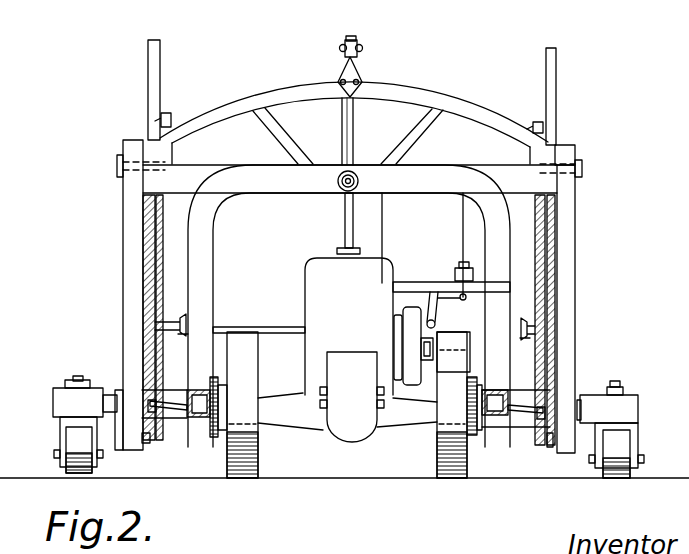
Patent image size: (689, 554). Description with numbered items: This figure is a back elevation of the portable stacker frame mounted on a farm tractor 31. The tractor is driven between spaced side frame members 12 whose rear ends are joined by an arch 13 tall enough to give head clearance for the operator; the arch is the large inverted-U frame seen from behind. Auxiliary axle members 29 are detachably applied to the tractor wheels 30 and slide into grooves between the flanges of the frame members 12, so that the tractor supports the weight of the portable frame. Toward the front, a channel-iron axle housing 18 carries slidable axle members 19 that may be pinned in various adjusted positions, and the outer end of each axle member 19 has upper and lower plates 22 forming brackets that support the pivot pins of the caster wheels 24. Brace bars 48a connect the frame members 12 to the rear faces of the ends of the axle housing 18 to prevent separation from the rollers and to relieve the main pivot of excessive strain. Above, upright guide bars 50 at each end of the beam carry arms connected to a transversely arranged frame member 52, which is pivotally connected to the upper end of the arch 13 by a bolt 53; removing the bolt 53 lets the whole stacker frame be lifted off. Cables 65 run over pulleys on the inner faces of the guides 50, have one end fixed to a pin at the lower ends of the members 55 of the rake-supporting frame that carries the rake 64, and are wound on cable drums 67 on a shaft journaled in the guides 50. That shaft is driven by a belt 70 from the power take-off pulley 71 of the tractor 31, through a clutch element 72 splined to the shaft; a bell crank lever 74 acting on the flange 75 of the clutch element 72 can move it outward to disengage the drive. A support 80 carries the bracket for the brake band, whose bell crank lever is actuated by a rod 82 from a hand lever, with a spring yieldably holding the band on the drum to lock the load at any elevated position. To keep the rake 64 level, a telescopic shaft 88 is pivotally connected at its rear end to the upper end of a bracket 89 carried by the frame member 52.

The frame member 12 is at (205, 420).
The arch 13 is at (205, 259).
The axle housing 18 is at (163, 398).
The axle member 19 is at (607, 409).
The plate 22 is at (627, 395).
The caster wheel 24 is at (625, 447).
The auxiliary axle member 29 is at (202, 408).
The wheel 30 is at (252, 376).
The tractor 31 is at (347, 317).
The brace bar 48a is at (172, 412).
The guide bar 50 is at (158, 74).
The frame member 52 is at (427, 92).
The bolt 53 is at (346, 188).
The member 55 is at (571, 218).
The rake 64 is at (172, 115).
The cable 65 is at (147, 332).
The cable drum 67 is at (183, 316).
The belt 70 is at (415, 340).
The pulley 71 is at (436, 357).
The clutch element 72 is at (433, 344).
The bell crank lever 74 is at (443, 299).
The flange 75 is at (467, 233).
The support 80 is at (408, 289).
The rod 82 is at (383, 232).
The telescopic shaft 88 is at (362, 53).
The bracket 89 is at (347, 72).